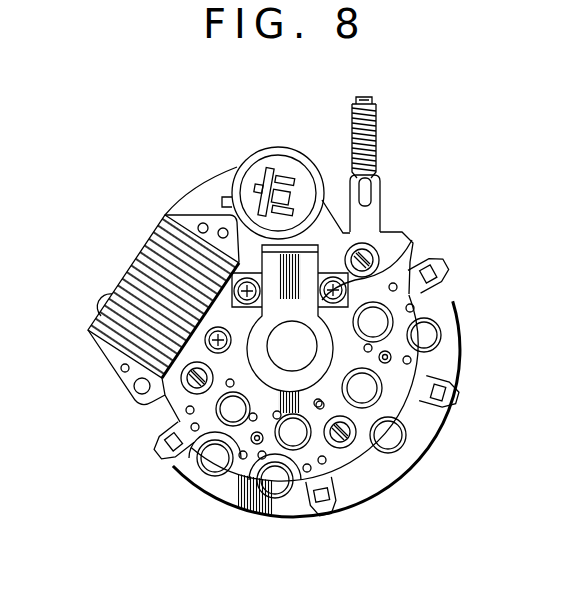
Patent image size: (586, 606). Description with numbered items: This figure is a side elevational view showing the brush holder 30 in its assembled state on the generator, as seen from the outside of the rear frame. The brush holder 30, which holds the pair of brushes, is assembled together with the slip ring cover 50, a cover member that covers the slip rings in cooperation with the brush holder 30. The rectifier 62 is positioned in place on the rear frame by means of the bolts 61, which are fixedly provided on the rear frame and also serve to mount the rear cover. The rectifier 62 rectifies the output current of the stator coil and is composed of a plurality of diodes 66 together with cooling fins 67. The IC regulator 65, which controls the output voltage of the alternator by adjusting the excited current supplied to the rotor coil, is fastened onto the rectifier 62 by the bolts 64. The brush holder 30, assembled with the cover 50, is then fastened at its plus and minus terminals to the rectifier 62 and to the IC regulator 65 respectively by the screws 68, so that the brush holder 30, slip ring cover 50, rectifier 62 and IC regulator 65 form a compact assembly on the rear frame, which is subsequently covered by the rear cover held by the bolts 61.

The brush holder 30 is at (300, 250).
The slip ring cover 50 is at (440, 368).
The bolt 61 is at (347, 440).
The rectifier 62 is at (403, 299).
The bolt 64 is at (140, 253).
The IC regulator 65 is at (118, 290).
The diode 66 is at (326, 344).
The cooling fin 67 is at (367, 420).
The screw 68 is at (237, 263).